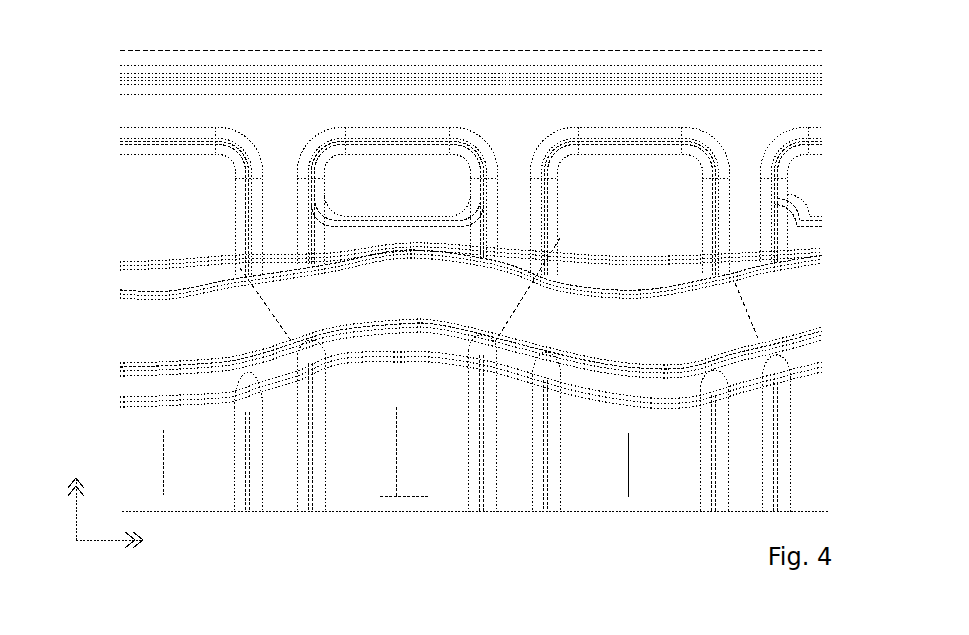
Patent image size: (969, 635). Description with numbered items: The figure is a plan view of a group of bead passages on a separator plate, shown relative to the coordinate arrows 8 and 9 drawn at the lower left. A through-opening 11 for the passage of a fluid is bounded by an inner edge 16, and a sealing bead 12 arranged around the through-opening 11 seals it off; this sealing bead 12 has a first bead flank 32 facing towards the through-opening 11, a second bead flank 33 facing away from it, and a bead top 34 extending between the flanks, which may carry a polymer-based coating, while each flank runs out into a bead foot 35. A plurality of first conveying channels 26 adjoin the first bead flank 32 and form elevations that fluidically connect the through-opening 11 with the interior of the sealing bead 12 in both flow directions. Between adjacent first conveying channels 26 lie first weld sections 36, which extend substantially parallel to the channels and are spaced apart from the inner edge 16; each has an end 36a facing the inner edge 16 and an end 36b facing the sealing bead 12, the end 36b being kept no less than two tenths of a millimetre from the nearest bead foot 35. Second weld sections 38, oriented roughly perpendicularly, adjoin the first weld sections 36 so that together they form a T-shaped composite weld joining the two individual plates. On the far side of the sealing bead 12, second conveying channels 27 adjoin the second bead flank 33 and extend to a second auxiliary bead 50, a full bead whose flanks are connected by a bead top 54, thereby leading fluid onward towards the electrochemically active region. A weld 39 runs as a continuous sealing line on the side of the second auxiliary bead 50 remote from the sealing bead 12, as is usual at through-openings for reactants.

The through-opening 11 is at (500, 558).
The weld 39 is at (402, 50).
The bead top 54 is at (169, 107).
The second auxiliary bead 50 is at (752, 117).
The second conveying channels 27 is at (272, 202).
The bead top 34 is at (800, 292).
The second bead flank 33 is at (132, 280).
The sealing bead 12 is at (790, 315).
The first bead flank 32 is at (142, 386).
The bead foot 35 is at (372, 367).
The first conveying channels 26 is at (747, 460).
The first weld sections 36 is at (163, 475).
The end facing towards the inner edge 36a is at (628, 497).
The end facing towards the sealing bead 36b is at (628, 433).
The second weld sections 38 is at (389, 497).
The inner edge 16 is at (198, 512).
The x direction 8 is at (75, 497).
The y direction 9 is at (100, 540).